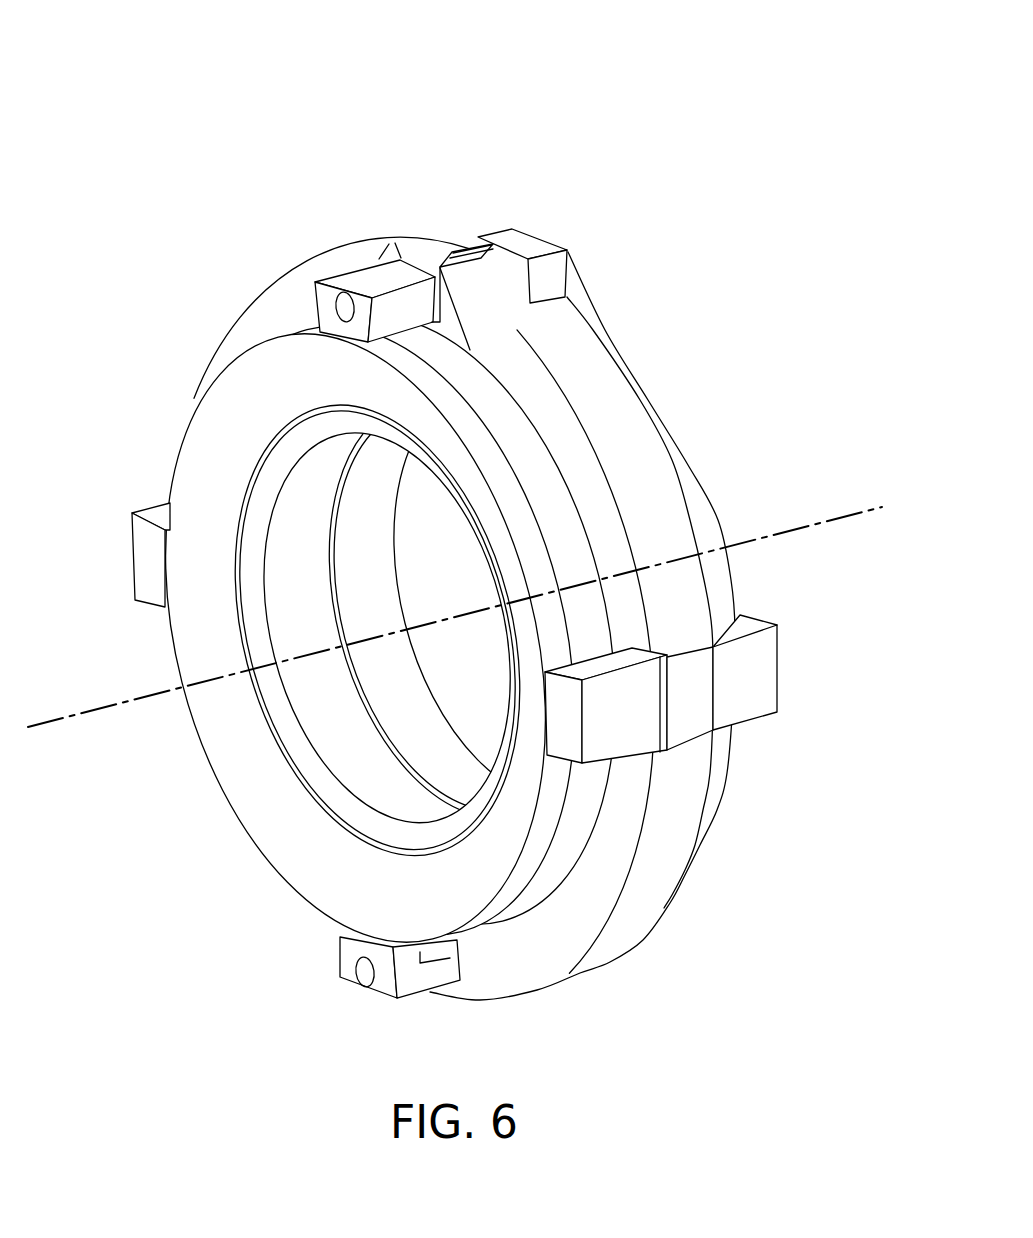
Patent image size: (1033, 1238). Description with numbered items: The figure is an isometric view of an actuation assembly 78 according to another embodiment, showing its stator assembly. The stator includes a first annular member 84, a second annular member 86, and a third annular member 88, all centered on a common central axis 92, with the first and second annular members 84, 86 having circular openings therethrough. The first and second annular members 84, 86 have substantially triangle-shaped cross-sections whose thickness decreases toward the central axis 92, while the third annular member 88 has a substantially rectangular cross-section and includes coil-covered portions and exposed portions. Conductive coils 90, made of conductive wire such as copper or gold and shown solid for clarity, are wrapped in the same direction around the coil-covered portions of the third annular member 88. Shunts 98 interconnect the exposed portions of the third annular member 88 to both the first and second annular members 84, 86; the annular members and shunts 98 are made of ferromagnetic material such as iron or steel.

The actuation assembly 78 is at (251, 125).
The first annular member 84 is at (190, 453).
The second annular member 86 is at (464, 596).
The third annular member 88 is at (451, 234).
The conductive coils 90 is at (304, 258).
The central axis 92 is at (48, 722).
The shunts 98 is at (545, 241).